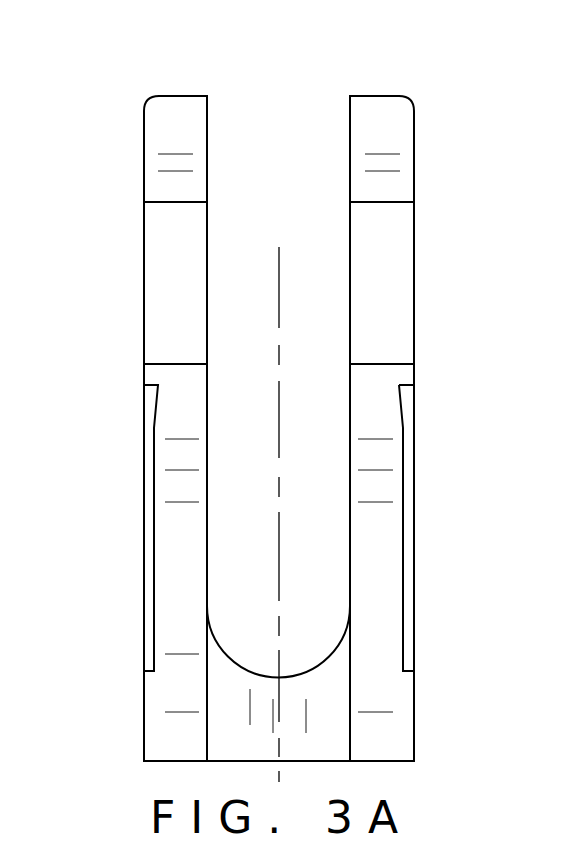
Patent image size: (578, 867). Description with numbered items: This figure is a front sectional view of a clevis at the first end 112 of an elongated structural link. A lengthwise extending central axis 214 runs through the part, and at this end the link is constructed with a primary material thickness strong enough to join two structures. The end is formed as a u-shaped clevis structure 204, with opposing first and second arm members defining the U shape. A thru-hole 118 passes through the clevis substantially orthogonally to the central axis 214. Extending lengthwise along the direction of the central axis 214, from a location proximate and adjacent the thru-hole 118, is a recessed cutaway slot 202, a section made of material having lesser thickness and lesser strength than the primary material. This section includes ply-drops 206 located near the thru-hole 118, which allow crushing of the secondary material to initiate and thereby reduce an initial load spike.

The first end 112 is at (436, 88).
The thru-hole 118 is at (165, 211).
The u-shaped clevis structure 204 is at (268, 174).
The ply-drops 206 is at (143, 415).
The recessed cutaway slot 202 is at (152, 527).
The central axis 214 is at (278, 487).